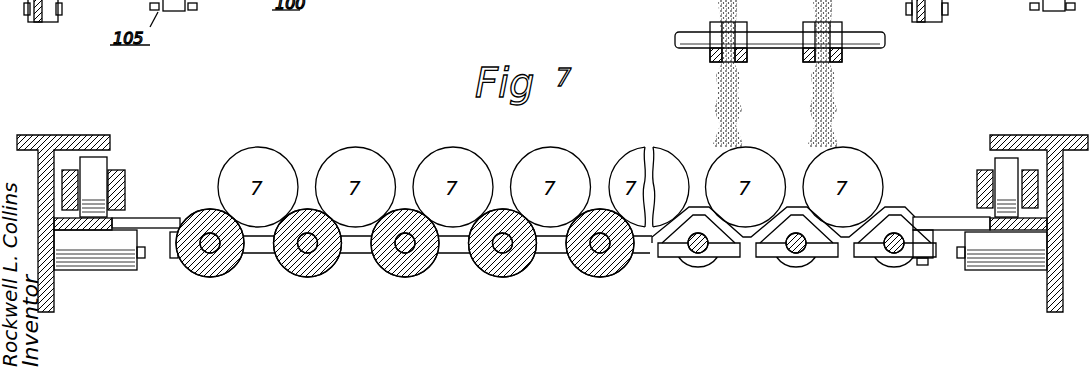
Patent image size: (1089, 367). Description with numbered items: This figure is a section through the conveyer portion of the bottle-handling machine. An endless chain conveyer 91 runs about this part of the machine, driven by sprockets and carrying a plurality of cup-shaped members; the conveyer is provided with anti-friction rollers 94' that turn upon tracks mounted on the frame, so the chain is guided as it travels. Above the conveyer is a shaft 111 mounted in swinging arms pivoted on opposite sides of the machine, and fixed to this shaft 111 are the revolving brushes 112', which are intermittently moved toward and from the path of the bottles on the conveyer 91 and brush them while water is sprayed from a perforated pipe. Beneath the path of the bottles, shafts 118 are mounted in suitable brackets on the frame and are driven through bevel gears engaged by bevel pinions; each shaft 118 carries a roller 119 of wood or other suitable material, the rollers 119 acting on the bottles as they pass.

The anti-friction rollers 94' is at (549, 178).
The endless chain conveyer 91 is at (121, 184).
The roller 119 is at (245, 300).
The shaft 118 is at (788, 252).
The shaft 111 is at (892, 69).
The revolving brushes 112' is at (775, 73).